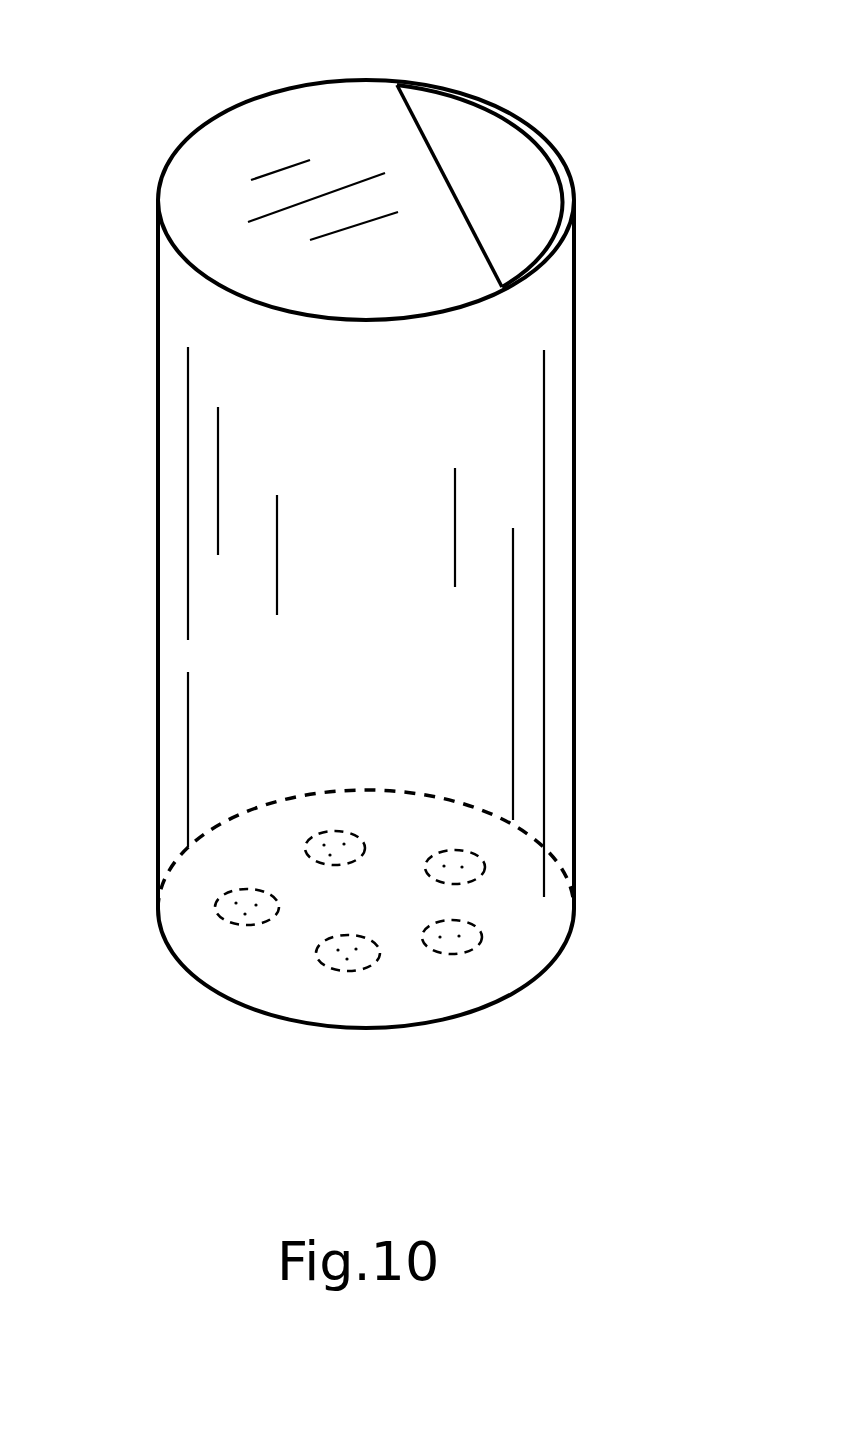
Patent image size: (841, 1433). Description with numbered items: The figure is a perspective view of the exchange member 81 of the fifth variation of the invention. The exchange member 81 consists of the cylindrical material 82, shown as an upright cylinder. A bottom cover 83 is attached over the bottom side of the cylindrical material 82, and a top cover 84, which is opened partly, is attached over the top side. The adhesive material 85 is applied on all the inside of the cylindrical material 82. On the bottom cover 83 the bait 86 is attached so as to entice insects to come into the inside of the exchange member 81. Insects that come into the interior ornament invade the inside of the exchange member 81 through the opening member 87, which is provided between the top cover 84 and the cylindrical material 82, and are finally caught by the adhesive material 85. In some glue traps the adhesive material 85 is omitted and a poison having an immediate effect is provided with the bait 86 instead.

The exchange member 81 is at (615, 320).
The cylindrical material 82 is at (175, 613).
The bottom cover 83 is at (458, 985).
The top cover 84 is at (273, 122).
The adhesive material 85 is at (522, 153).
The bait 86 is at (280, 909).
The opening member 87 is at (458, 143).